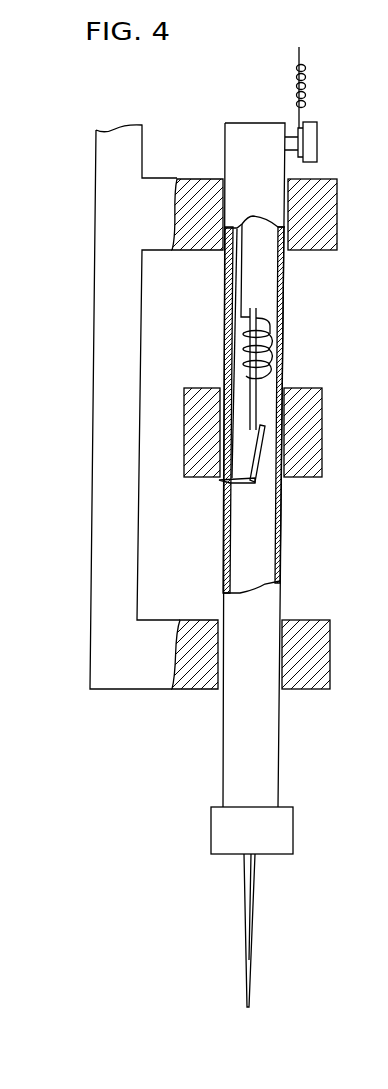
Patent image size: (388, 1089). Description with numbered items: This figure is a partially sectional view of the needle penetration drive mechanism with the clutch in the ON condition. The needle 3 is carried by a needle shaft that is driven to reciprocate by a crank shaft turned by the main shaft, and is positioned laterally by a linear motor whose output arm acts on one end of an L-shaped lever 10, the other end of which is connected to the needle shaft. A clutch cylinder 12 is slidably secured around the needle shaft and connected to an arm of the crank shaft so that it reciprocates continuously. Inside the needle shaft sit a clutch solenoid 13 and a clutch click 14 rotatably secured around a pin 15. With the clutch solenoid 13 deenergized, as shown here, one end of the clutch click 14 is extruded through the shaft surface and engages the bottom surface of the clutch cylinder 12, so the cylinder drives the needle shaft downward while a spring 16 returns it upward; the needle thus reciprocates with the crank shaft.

The needle 3 is at (253, 900).
The L-shaped lever 10 is at (100, 413).
The clutch cylinder 12 is at (322, 437).
The clutch solenoid 13 is at (280, 345).
The clutch click 14 is at (240, 483).
The pin 15 is at (253, 485).
The spring 16 is at (307, 88).